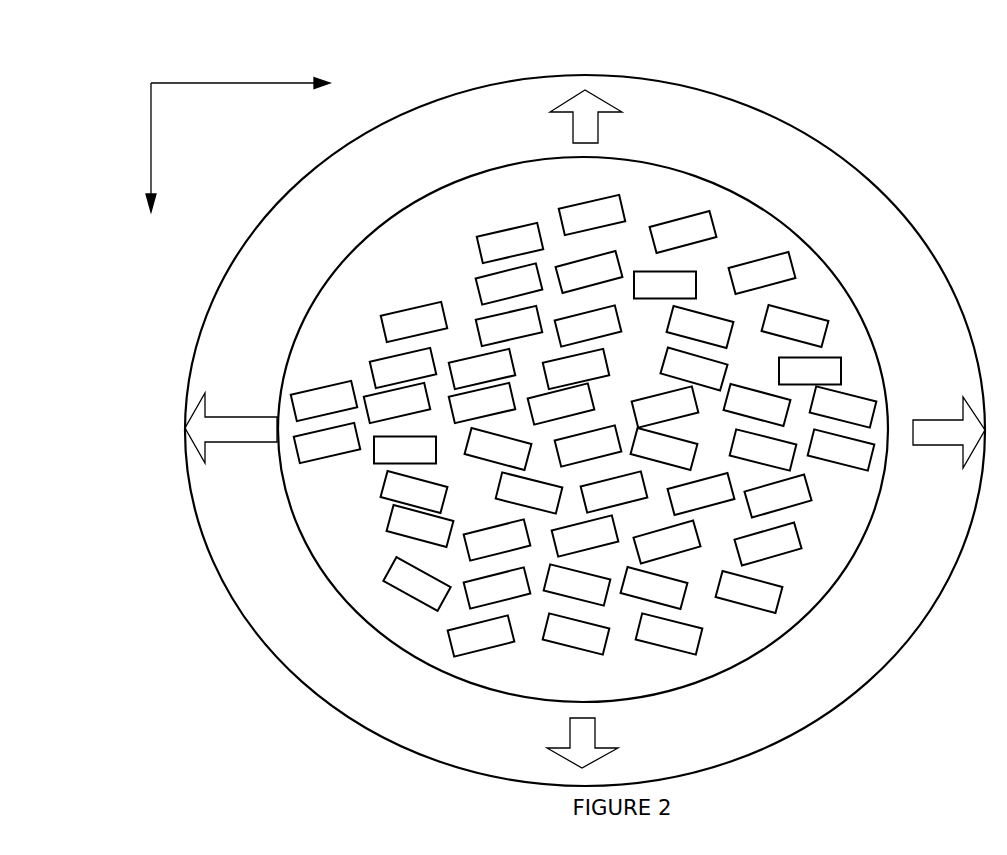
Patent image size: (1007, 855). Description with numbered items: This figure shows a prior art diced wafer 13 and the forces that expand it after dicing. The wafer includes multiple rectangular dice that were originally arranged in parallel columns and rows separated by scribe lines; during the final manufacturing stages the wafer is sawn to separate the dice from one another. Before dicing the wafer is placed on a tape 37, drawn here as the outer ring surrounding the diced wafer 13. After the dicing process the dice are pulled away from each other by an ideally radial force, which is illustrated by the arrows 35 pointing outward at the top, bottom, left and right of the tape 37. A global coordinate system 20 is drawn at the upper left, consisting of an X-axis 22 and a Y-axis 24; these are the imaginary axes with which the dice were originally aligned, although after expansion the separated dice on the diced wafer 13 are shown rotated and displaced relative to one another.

The diced wafer 13 is at (808, 243).
The tape 37 is at (780, 120).
The arrows 35 is at (585, 429).
The global coordinate system 20 is at (218, 139).
The X-axis 22 is at (240, 66).
The Y-axis 24 is at (149, 159).